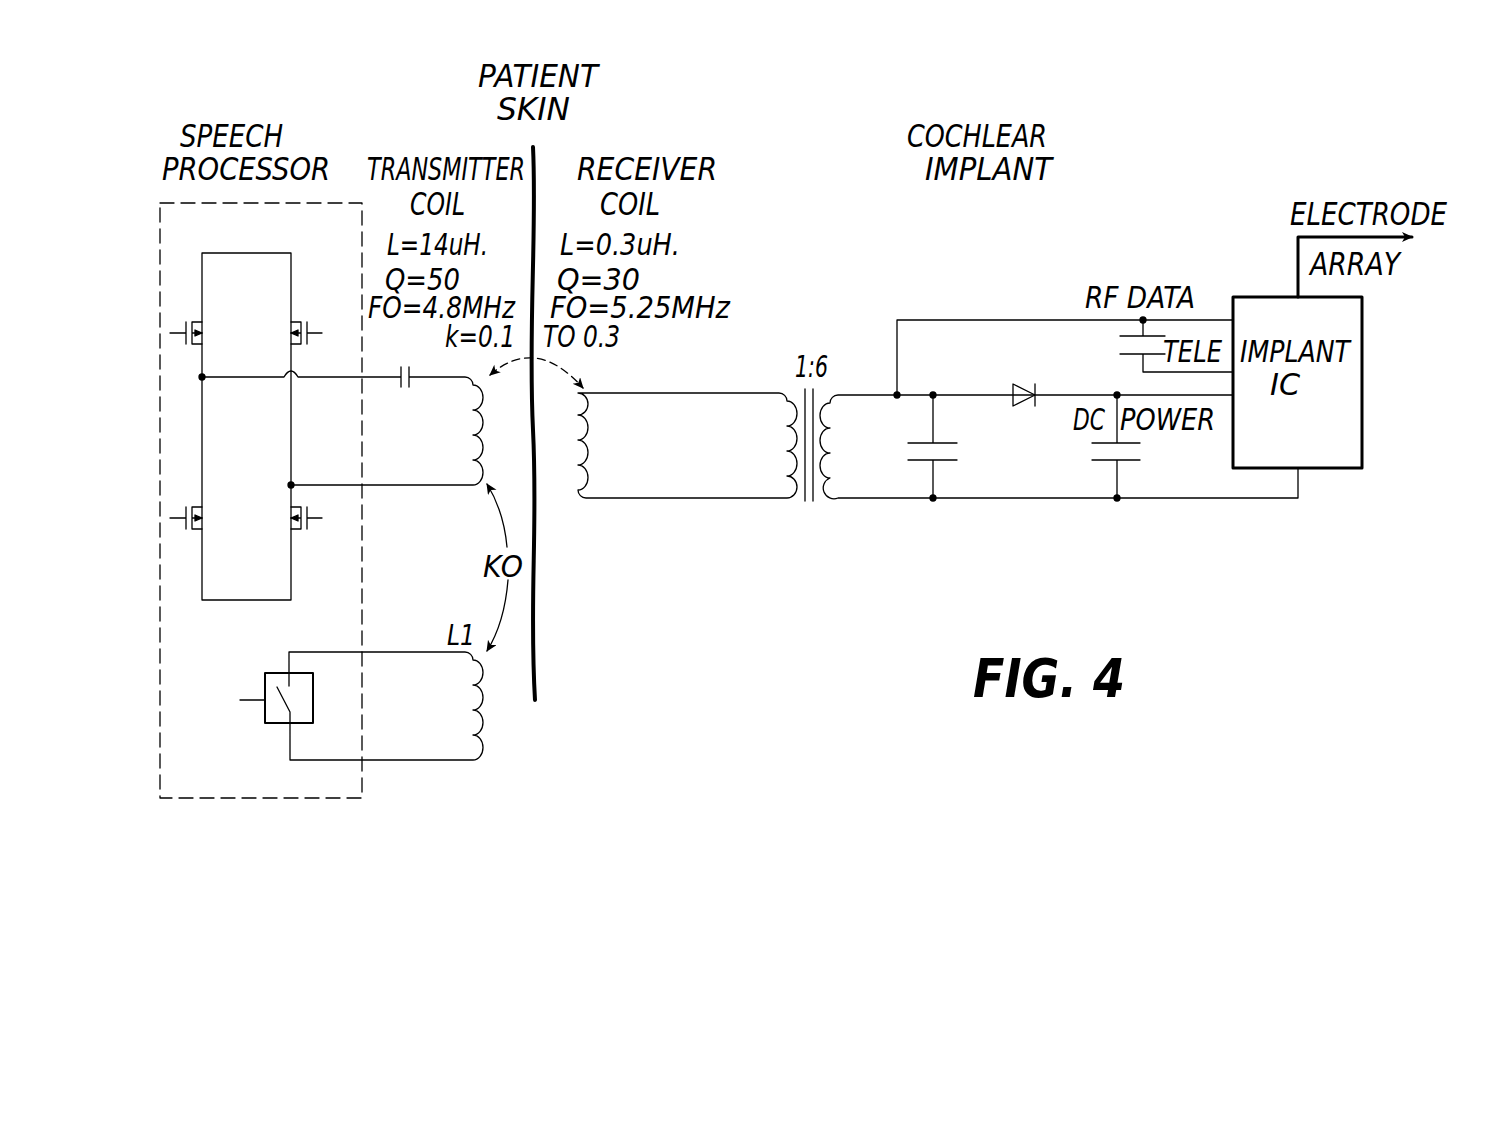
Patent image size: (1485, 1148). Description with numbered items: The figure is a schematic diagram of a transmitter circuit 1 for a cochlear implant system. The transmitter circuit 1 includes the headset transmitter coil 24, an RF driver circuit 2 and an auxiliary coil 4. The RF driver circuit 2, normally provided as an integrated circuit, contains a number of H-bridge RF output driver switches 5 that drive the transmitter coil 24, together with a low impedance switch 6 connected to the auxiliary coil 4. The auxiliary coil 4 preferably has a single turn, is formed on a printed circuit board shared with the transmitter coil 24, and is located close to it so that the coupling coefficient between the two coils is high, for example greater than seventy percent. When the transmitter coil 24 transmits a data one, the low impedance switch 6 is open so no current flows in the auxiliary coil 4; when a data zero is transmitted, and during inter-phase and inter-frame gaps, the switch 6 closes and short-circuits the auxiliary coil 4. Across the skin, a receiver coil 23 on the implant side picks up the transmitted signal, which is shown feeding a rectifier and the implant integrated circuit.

The transmitter circuit 1 is at (338, 820).
The RF driver circuit 2 is at (261, 500).
The auxiliary coil 4 is at (485, 750).
The H-bridge RF output driver switches 5 is at (270, 393).
The low impedance switch 6 is at (263, 668).
The receiver coil 23 is at (592, 504).
The headset transmitter coil 24 is at (443, 489).